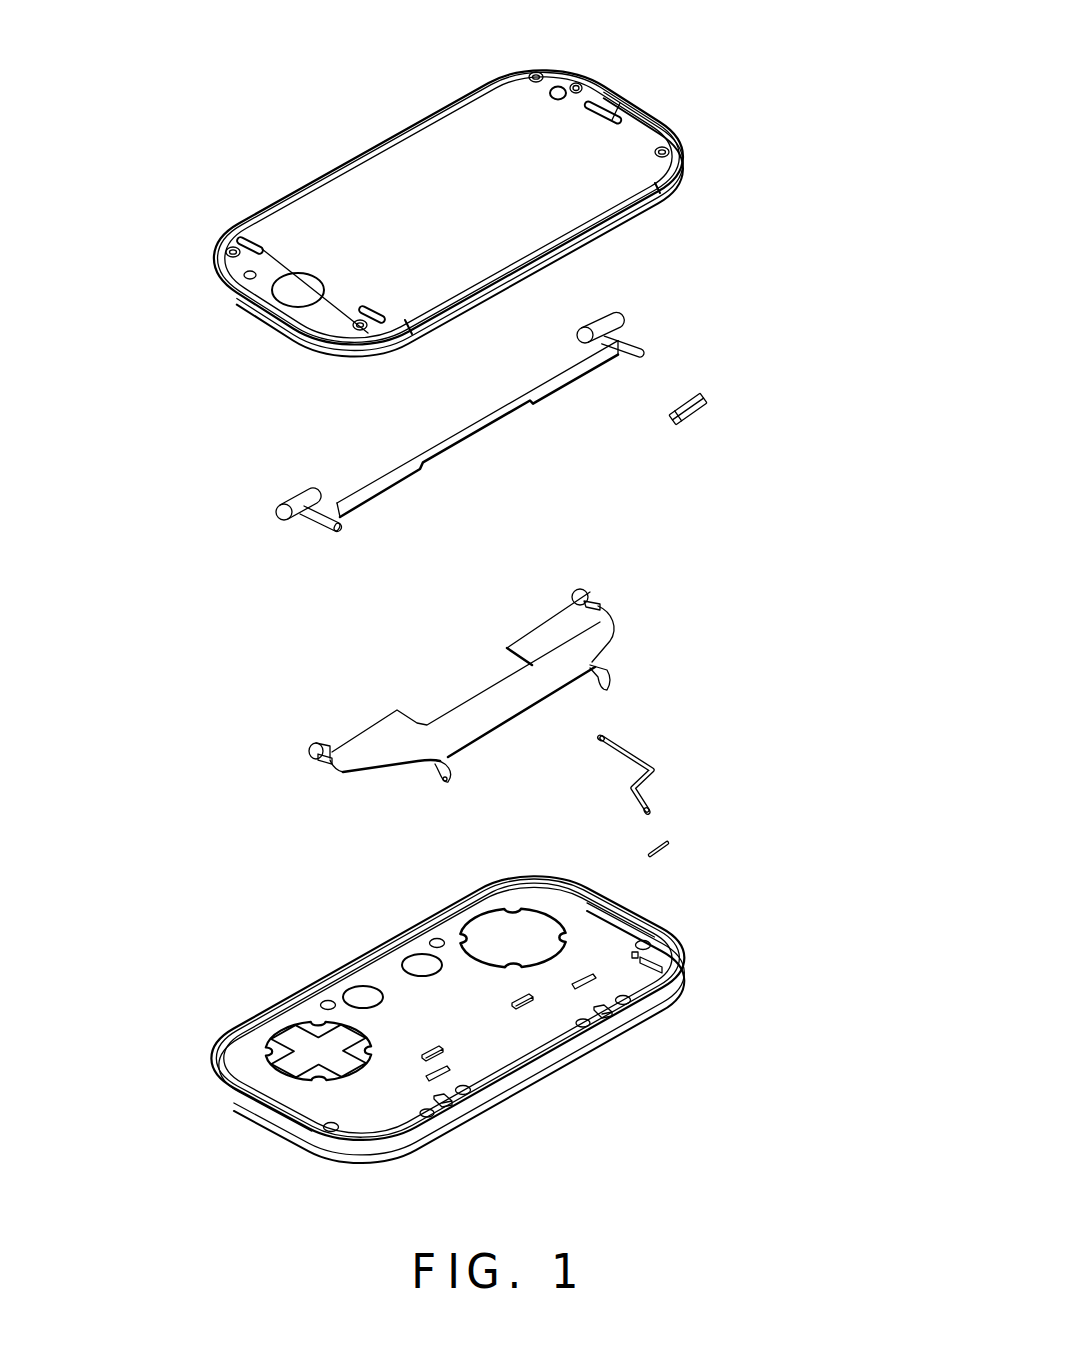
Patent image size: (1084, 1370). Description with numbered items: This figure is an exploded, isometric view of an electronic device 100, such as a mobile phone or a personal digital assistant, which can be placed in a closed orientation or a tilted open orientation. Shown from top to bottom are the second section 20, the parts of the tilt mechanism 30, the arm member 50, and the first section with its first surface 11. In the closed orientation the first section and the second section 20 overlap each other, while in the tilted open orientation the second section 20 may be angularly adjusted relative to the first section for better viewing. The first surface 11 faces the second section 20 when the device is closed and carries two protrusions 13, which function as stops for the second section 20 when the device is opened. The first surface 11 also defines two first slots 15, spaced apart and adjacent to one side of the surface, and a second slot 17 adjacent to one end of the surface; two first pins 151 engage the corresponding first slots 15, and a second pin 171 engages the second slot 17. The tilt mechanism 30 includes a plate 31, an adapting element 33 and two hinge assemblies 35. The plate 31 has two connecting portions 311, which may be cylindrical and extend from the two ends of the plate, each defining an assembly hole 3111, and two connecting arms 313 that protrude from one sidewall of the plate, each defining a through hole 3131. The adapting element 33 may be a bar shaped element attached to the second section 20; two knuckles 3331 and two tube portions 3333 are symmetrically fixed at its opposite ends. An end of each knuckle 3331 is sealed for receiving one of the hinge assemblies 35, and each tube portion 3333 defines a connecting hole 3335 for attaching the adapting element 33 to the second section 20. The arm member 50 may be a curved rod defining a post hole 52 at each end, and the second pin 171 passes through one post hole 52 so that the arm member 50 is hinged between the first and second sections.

The electronic device 100 is at (497, 27).
The second section 20 is at (336, 210).
The tilt mechanism 30 is at (782, 433).
The plate 31 is at (470, 695).
The connecting portions 311 is at (316, 746).
The assembly hole 3111 is at (317, 756).
The connecting arms 313 is at (447, 777).
The through hole 3131 is at (440, 781).
The adapting element 33 is at (464, 452).
The knuckles 3331 is at (296, 492).
The tube portions 3333 is at (338, 529).
The connecting hole 3335 is at (332, 531).
The hinge assemblies 35 is at (695, 418).
The arm member 50 is at (657, 759).
The post hole 52 is at (604, 735).
The second pin 171 is at (671, 850).
The second slot 17 is at (654, 963).
The first surface 11 is at (257, 1078).
The protrusions 13 is at (531, 1007).
The first slots 15 is at (611, 1017).
The first pins 151 is at (597, 980).